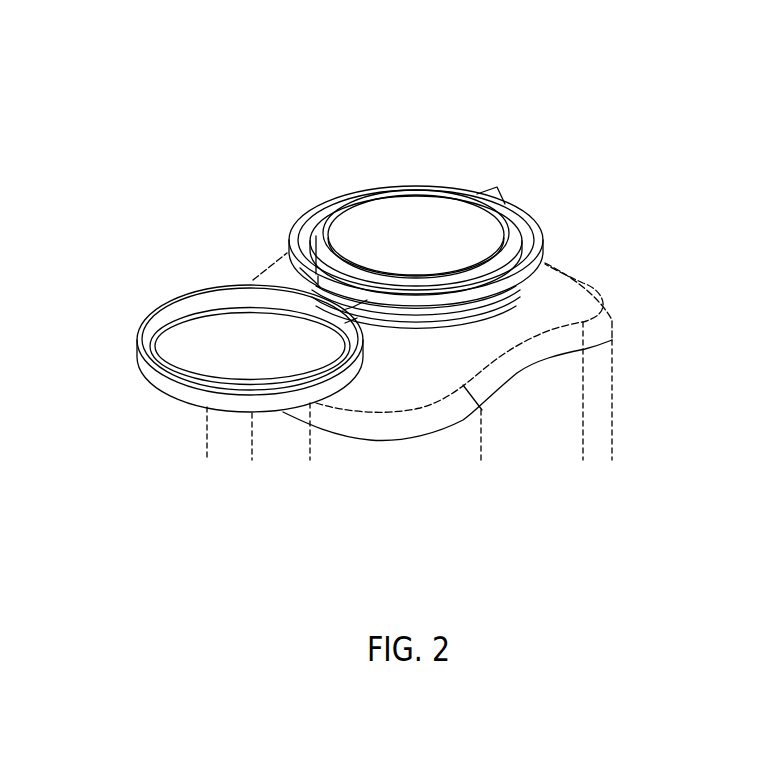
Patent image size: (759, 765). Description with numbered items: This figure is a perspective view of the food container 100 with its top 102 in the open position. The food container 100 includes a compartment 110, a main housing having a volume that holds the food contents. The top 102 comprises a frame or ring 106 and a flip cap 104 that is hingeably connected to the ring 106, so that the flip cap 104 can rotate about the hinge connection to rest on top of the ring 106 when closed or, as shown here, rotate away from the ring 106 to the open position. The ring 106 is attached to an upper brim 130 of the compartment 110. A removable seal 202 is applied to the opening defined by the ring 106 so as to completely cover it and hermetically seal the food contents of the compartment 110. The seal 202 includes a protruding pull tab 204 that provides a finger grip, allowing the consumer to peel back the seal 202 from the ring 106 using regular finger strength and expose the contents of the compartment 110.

The food container 100 is at (149, 106).
The top 102 is at (316, 205).
The flip cap 104 is at (167, 305).
The frame or ring 106 is at (532, 237).
The compartment 110 is at (610, 330).
The upper brim 130 is at (530, 282).
The removable seal 202 is at (410, 201).
The pull tab 204 is at (498, 188).